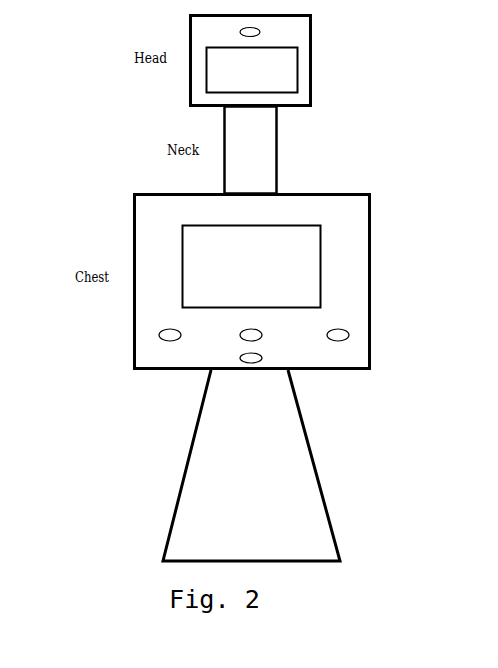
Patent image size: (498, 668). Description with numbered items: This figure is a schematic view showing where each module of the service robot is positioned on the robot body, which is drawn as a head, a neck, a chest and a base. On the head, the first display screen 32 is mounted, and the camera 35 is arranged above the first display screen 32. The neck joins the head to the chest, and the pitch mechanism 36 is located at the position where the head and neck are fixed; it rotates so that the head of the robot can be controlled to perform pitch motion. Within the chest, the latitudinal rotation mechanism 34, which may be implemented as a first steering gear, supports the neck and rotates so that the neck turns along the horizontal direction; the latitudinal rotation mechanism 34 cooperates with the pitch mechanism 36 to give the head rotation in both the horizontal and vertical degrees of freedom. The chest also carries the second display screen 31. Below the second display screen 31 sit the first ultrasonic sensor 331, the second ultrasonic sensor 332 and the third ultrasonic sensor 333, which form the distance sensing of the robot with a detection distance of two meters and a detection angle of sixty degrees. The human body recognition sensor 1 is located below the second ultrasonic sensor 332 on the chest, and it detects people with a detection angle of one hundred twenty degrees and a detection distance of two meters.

The human body recognition sensor 1 is at (256, 358).
The second display screen 31 is at (252, 267).
The first display screen 32 is at (252, 70).
The latitudinal rotation mechanism 34 is at (252, 282).
The camera 35 is at (262, 32).
The pitch mechanism 36 is at (251, 150).
The first ultrasonic sensor 331 is at (170, 327).
The second ultrasonic sensor 332 is at (251, 327).
The third ultrasonic sensor 333 is at (339, 327).